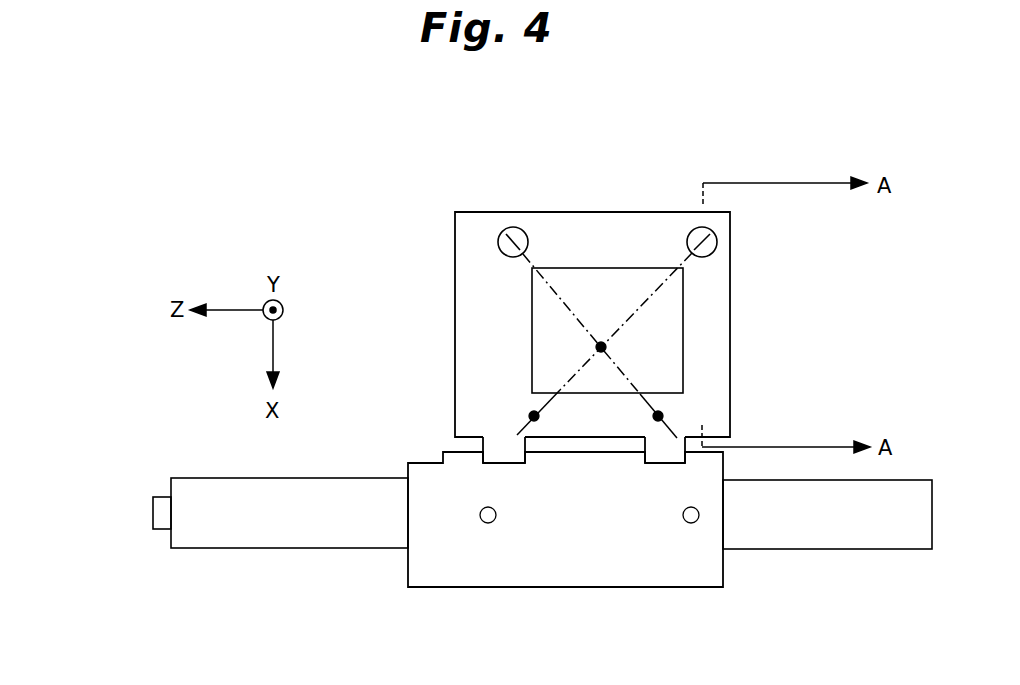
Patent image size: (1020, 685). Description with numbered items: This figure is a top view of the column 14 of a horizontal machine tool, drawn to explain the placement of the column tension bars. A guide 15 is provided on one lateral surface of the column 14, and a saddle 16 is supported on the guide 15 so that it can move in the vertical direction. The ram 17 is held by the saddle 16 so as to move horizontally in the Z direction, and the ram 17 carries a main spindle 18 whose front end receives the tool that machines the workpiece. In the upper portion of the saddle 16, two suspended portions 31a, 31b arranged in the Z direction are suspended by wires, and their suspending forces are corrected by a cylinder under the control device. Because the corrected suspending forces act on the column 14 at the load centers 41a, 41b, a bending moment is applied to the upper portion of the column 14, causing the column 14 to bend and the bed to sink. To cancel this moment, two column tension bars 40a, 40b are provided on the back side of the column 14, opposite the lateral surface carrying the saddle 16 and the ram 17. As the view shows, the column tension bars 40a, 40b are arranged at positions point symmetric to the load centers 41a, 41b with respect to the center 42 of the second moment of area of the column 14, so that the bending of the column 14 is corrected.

The column 14 is at (490, 330).
The guide 15 is at (510, 455).
The saddle 16 is at (595, 577).
The ram 17 is at (297, 530).
The main spindle 18 is at (162, 513).
The suspended portion 31a is at (488, 523).
The suspended portion 31b is at (691, 523).
The column tension bar 40a is at (686, 217).
The column tension bar 40b is at (529, 217).
The load center 41a is at (530, 416).
The load center 41b is at (663, 414).
The center of the second moment of area 42 is at (606, 346).